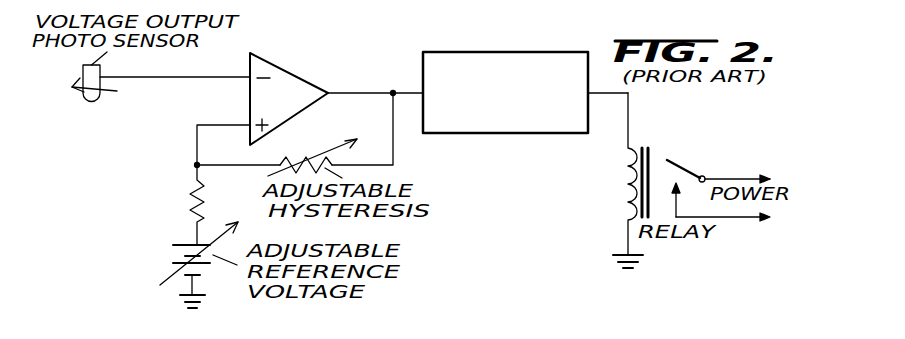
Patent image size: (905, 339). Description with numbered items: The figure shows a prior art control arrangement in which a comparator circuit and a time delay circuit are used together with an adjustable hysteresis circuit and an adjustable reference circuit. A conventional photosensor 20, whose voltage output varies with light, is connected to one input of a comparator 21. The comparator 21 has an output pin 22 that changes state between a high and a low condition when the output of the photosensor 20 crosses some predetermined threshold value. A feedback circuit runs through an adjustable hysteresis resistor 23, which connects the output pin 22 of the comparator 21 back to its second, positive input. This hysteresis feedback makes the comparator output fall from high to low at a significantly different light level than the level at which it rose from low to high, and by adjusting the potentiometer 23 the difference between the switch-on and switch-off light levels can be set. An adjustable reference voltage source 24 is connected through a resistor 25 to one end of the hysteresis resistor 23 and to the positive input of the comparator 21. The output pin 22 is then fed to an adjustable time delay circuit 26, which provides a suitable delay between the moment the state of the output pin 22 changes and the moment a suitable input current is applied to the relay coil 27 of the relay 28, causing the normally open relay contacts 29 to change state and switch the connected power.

The photosensor 20 is at (91, 102).
The comparator 21 is at (289, 99).
The output pin 22 is at (393, 91).
The adjustable hysteresis resistor 23 is at (300, 150).
The adjustable reference voltage source 24 is at (178, 255).
The resistor 25 is at (193, 197).
The adjustable time delay circuit 26 is at (485, 133).
The relay coil 27 is at (625, 183).
The relay 28 is at (655, 143).
The normally open relay contacts 29 is at (690, 168).